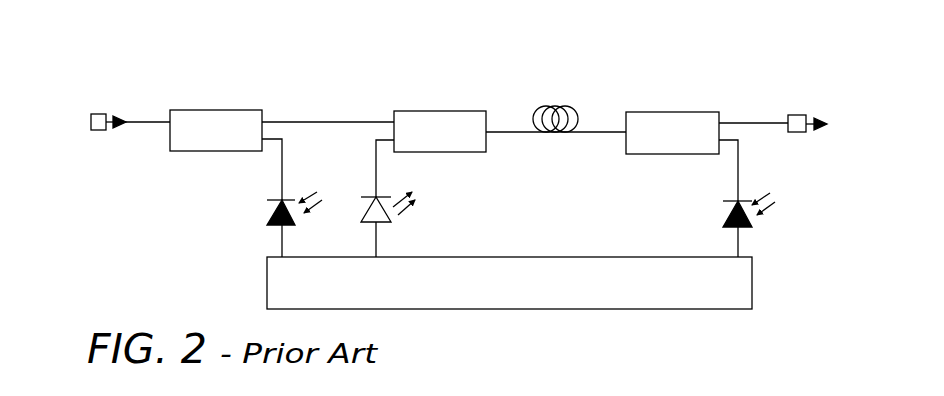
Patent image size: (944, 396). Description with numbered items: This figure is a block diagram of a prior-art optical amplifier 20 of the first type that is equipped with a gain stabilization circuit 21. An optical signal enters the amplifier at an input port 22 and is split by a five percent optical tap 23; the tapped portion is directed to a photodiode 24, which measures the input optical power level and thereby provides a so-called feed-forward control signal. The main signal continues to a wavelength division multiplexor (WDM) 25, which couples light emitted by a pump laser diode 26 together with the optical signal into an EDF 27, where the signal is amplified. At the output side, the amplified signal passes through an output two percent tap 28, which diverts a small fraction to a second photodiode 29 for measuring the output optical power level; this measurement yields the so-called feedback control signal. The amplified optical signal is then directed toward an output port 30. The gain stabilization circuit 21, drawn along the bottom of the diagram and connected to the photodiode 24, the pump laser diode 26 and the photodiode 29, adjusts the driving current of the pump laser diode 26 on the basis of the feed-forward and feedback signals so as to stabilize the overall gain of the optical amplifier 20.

The optical amplifier 20 is at (657, 30).
The gain stabilization circuit 21 is at (676, 299).
The input port 22 is at (97, 110).
The 5% optical tap 23 is at (203, 110).
The photodiode 24 is at (275, 207).
The wavelength division multiplexor (WDM) 25 is at (423, 111).
The pump laser diode 26 is at (392, 214).
The EDF 27 is at (553, 133).
The output 2% tap 28 is at (630, 155).
The photodiode 29 is at (727, 211).
The output port 30 is at (798, 115).